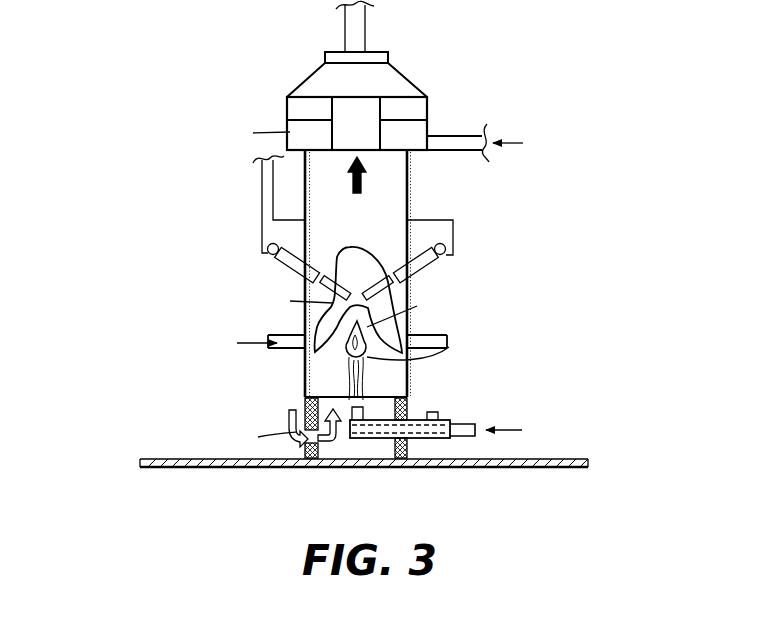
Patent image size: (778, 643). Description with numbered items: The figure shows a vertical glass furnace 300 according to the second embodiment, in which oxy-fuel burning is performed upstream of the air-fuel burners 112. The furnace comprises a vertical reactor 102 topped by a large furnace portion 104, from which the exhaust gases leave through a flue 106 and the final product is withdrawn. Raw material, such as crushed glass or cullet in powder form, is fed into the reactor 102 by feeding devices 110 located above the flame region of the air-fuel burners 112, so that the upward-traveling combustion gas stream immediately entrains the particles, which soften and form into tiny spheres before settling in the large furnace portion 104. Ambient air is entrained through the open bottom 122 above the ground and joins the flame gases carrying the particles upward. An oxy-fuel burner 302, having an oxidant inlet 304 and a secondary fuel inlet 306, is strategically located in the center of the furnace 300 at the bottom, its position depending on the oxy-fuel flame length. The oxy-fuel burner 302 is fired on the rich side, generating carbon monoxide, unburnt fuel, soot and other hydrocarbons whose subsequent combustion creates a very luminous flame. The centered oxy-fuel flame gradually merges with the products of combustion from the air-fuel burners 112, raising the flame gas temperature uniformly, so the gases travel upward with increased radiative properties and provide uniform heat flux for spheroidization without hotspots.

The furnace 300 is at (172, 100).
The vertical reactor 102 is at (390, 189).
The large furnace portion 104 is at (409, 104).
The flue 106 is at (357, 28).
The feeding devices 110 is at (287, 270).
The air-fuel burners 112 is at (283, 336).
The open bottom 122 is at (317, 382).
The oxy-fuel burner 302 is at (515, 410).
The oxidant inlet 304 is at (433, 410).
The secondary fuel inlet 306 is at (457, 439).